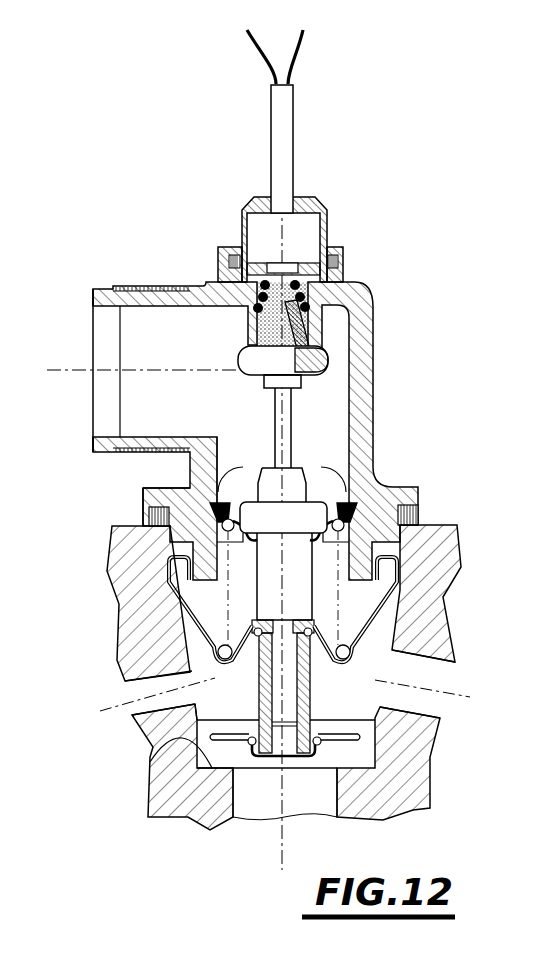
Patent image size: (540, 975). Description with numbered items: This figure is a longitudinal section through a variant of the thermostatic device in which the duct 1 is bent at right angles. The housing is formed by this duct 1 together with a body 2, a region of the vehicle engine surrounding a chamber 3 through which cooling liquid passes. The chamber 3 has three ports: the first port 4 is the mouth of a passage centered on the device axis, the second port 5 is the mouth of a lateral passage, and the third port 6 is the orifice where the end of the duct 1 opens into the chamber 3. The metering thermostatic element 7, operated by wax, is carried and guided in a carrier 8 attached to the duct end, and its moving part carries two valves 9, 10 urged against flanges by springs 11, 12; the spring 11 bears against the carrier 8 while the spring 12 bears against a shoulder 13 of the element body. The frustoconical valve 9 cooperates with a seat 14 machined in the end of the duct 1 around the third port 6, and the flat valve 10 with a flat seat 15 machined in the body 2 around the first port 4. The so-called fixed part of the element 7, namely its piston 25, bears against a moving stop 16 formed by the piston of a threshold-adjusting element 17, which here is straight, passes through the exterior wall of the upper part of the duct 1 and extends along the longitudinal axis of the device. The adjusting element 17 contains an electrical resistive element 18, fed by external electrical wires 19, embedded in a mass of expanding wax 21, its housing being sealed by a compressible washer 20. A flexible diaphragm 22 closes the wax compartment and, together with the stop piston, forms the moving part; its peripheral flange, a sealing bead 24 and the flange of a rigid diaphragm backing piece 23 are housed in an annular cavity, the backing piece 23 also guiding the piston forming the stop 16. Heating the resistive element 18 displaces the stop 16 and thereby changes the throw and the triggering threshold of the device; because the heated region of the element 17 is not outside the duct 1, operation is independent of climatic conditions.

The duct 1 is at (360, 412).
The body 2 is at (436, 566).
The chamber 3 is at (214, 705).
The first port 4 is at (285, 792).
The second port 5 is at (413, 700).
The third port 6 is at (200, 467).
The thermostatic element 7 is at (300, 570).
The carrier 8 is at (365, 632).
The valve 9 is at (352, 515).
The valve 10 is at (332, 731).
The spring 11 is at (228, 600).
The spring 12 is at (190, 690).
The shoulder 13 is at (318, 622).
The seat 14 is at (342, 498).
The seat 15 is at (153, 737).
The stop 16 is at (298, 383).
The threshold-adjusting element 17 is at (255, 337).
The electrical resistive element 18 is at (307, 293).
The external electrical wires 19 is at (294, 52).
The sealing washer 20 is at (340, 263).
The expanding wax 21 is at (302, 321).
The diaphragm 22 is at (252, 347).
The diaphragm backing piece 23 is at (262, 390).
The sealing bead 24 is at (328, 358).
The piston 25 is at (286, 440).